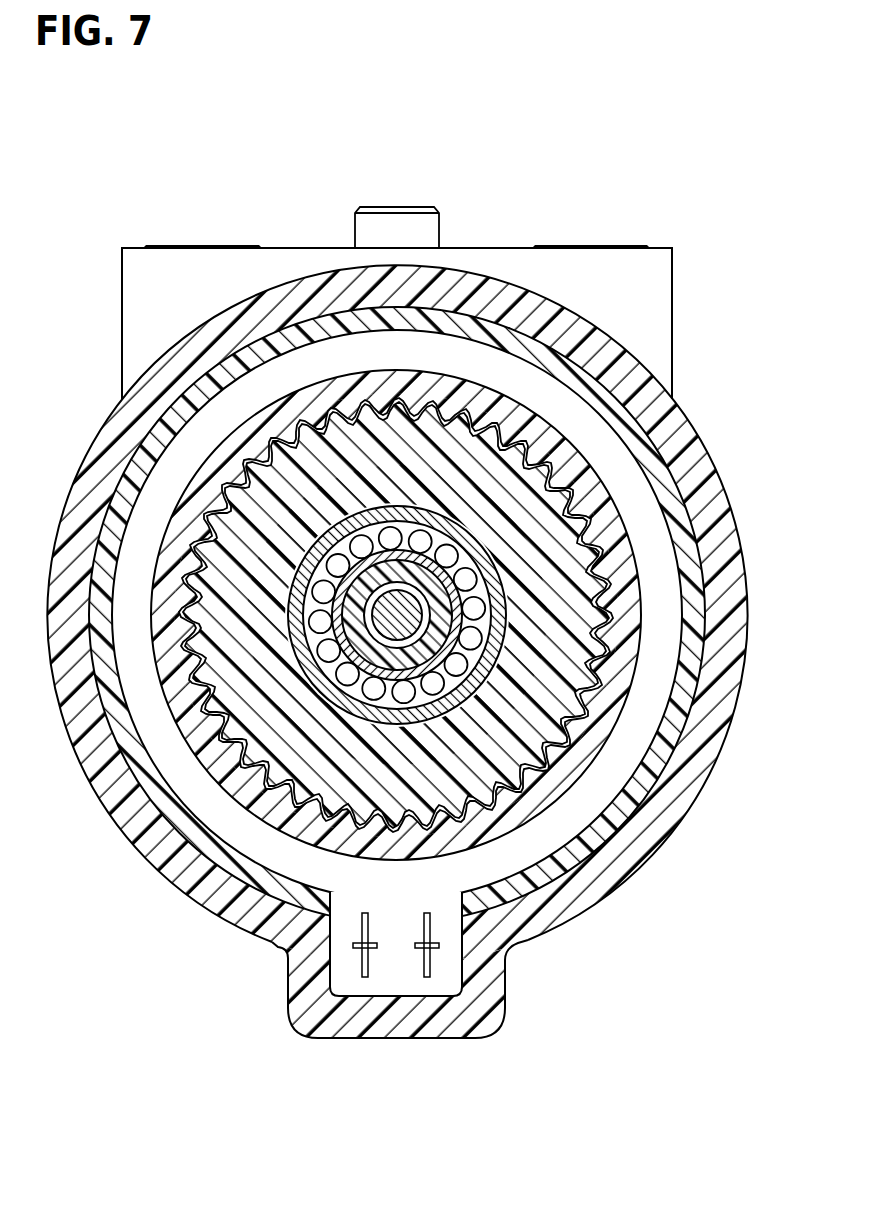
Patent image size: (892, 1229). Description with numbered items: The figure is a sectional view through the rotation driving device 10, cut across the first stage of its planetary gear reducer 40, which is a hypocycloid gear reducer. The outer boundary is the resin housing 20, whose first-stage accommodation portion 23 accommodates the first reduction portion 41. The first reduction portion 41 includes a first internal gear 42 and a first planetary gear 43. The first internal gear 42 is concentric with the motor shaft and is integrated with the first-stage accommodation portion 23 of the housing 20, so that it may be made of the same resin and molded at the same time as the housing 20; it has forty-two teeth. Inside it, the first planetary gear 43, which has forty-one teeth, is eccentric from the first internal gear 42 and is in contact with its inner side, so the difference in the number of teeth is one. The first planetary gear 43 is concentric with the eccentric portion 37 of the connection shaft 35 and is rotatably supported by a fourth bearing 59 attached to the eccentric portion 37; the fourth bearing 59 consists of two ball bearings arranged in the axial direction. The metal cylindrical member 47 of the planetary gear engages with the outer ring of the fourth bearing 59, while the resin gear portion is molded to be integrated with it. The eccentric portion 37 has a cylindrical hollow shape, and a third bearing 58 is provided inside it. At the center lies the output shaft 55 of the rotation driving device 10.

The rotation driving device 10 is at (121, 224).
The housing 20 is at (378, 651).
The first-stage accommodation portion 23 is at (637, 377).
The connection shaft 35 is at (353, 572).
The eccentric portion 37 is at (355, 610).
The planetary gear reducer 40 is at (422, 672).
The first reduction portion 41 is at (513, 843).
The first internal gear 42 is at (221, 769).
The first planetary gear 43 is at (293, 770).
The cylindrical member 47 is at (390, 462).
The output shaft 55 is at (400, 614).
The third bearing 58 is at (432, 698).
The fourth bearing 59 is at (262, 667).